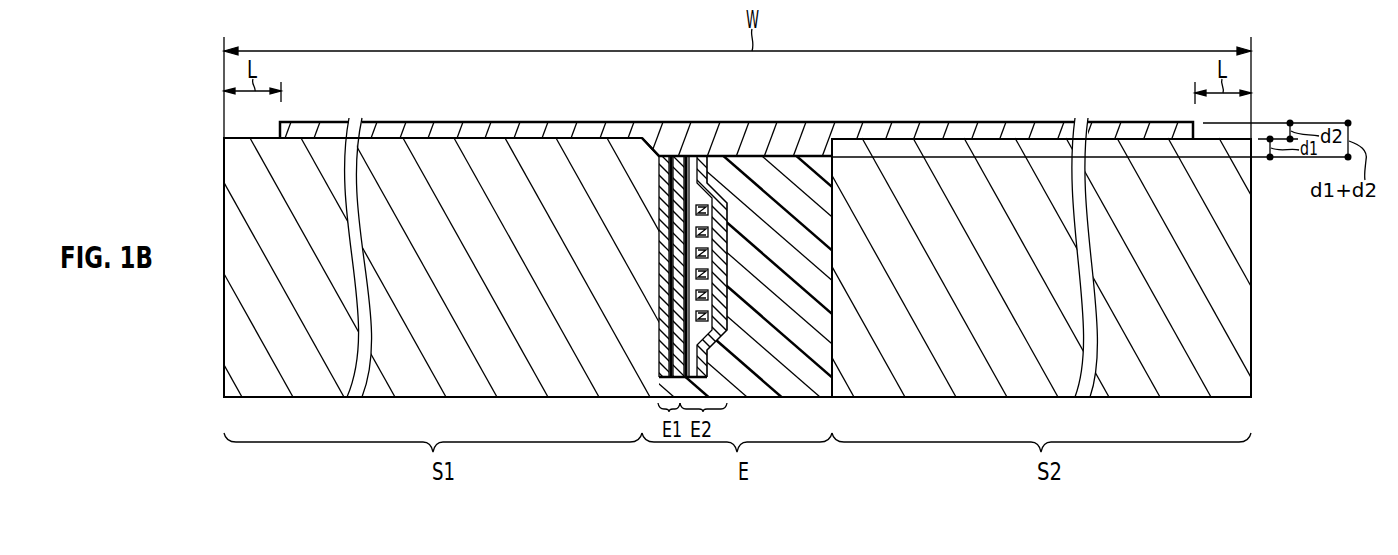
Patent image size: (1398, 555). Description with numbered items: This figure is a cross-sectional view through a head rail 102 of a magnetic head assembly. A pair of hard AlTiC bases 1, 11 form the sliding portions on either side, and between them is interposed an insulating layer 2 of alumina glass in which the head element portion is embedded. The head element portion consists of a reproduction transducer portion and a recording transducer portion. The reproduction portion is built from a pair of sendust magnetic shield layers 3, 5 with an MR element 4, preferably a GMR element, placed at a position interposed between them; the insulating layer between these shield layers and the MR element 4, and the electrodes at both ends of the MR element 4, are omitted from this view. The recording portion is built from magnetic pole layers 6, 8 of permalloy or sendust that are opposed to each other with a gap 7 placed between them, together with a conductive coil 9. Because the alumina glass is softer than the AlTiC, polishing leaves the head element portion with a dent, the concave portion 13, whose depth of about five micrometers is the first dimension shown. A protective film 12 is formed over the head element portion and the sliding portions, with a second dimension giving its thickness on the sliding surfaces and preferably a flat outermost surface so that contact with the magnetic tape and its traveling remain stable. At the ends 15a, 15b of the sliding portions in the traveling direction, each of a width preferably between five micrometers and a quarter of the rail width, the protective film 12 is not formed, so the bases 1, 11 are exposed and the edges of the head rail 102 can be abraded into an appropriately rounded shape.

The base 1 is at (497, 156).
The insulating layer 2 is at (787, 170).
The magnetic shield layer 3 is at (661, 160).
The MR element 4 is at (671, 160).
The magnetic shield layer 5 is at (681, 160).
The magnetic pole layer 6 is at (687, 163).
The gap 7 is at (701, 166).
The magnetic pole layer 8 is at (706, 172).
The conductive coil 9 is at (721, 170).
The base 11 is at (958, 148).
The protective film 12 is at (895, 132).
The concave portion 13 is at (761, 156).
The end 15a is at (257, 129).
The end 15b is at (1218, 129).
The head rail 102 is at (1266, 112).